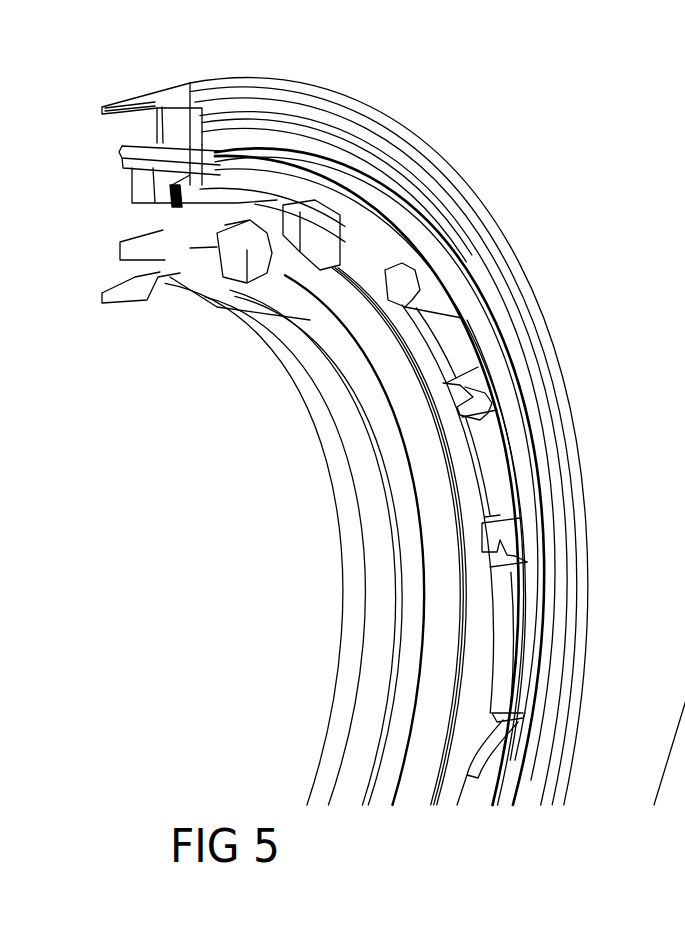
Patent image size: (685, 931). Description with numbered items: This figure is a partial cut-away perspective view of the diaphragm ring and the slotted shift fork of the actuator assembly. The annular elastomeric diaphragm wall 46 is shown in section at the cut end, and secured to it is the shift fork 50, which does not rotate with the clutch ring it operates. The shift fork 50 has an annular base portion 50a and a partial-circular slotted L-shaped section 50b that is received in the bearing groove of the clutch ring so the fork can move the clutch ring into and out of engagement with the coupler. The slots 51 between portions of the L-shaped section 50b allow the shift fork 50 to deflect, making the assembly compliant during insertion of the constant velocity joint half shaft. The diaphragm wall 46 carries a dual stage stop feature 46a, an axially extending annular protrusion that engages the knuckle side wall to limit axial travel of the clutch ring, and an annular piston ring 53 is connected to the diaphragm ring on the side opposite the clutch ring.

The elastomeric diaphragm wall 46 is at (155, 318).
The dual stage stop feature 46a is at (526, 422).
The shift fork 50 is at (541, 573).
The annular base portion 50a is at (262, 186).
The partial-circular slotted L-shaped section 50b is at (385, 268).
The slots 51 is at (360, 262).
The annular piston ring 53 is at (130, 185).